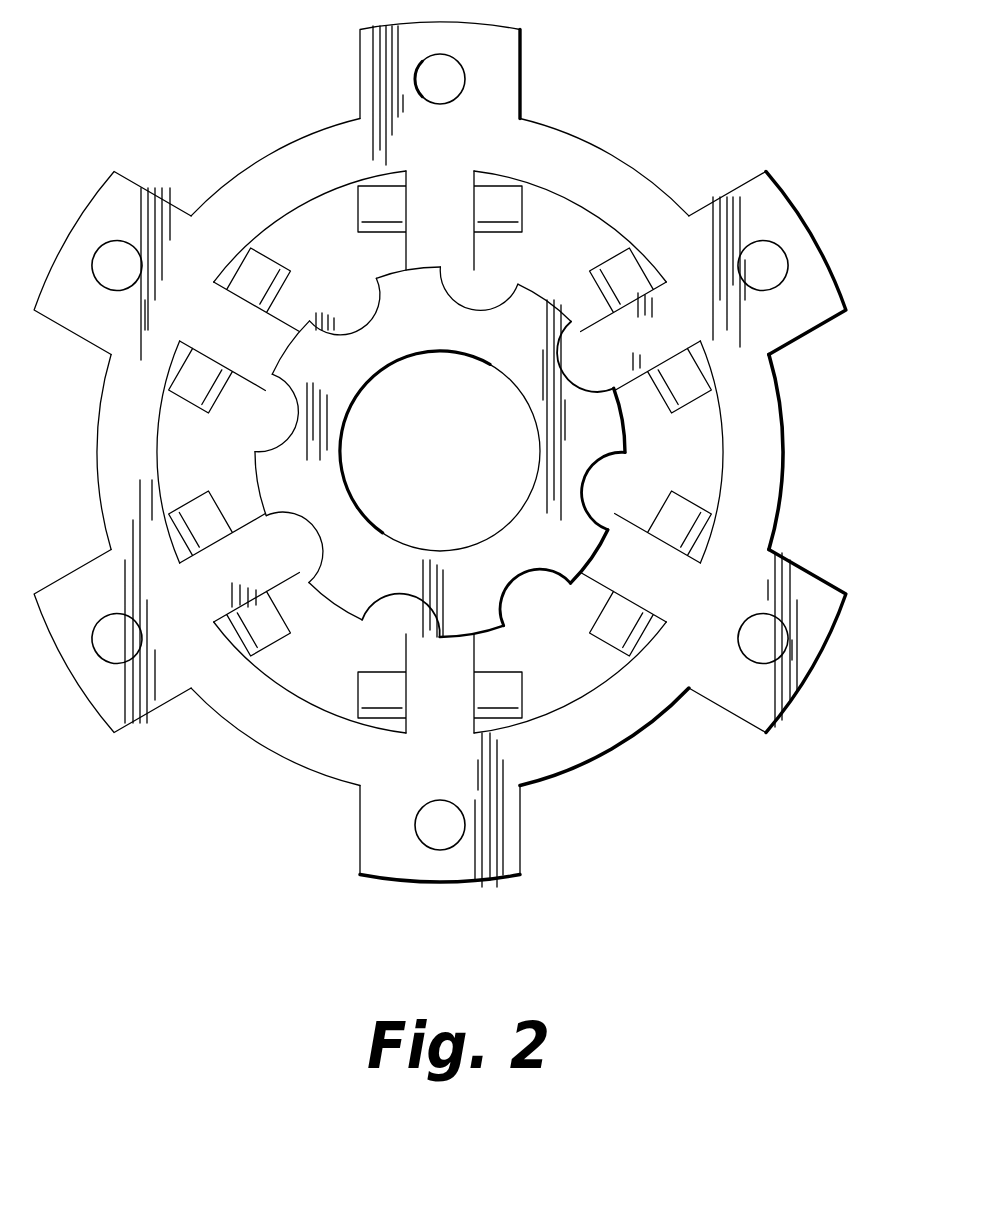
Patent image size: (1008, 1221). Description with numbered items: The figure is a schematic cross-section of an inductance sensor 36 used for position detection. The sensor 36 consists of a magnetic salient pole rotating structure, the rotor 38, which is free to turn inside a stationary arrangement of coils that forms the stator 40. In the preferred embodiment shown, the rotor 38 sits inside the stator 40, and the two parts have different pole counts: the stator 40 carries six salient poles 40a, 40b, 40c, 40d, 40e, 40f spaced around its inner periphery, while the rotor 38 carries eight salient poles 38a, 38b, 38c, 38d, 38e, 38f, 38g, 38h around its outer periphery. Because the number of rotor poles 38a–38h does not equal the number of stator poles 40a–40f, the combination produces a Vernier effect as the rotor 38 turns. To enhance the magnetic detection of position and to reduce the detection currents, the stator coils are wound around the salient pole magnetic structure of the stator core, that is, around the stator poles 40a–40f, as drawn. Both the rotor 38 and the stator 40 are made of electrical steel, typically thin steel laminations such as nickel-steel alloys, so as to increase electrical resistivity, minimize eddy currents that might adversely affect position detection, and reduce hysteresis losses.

The inductance sensor 36 is at (462, 452).
The rotor 38 is at (576, 452).
The rotor salient pole 38a is at (437, 315).
The rotor salient pole 38b is at (546, 347).
The rotor salient pole 38c is at (607, 447).
The rotor salient pole 38d is at (581, 560).
The rotor salient pole 38e is at (482, 618).
The rotor salient pole 38f is at (366, 585).
The rotor salient pole 38g is at (316, 492).
The rotor salient pole 38h is at (341, 375).
The stator 40 is at (459, 454).
The stator salient pole 40a is at (457, 237).
The stator salient pole 40b is at (654, 350).
The stator salient pole 40c is at (659, 582).
The stator salient pole 40d is at (458, 700).
The stator salient pole 40e is at (279, 577).
The stator salient pole 40f is at (264, 353).